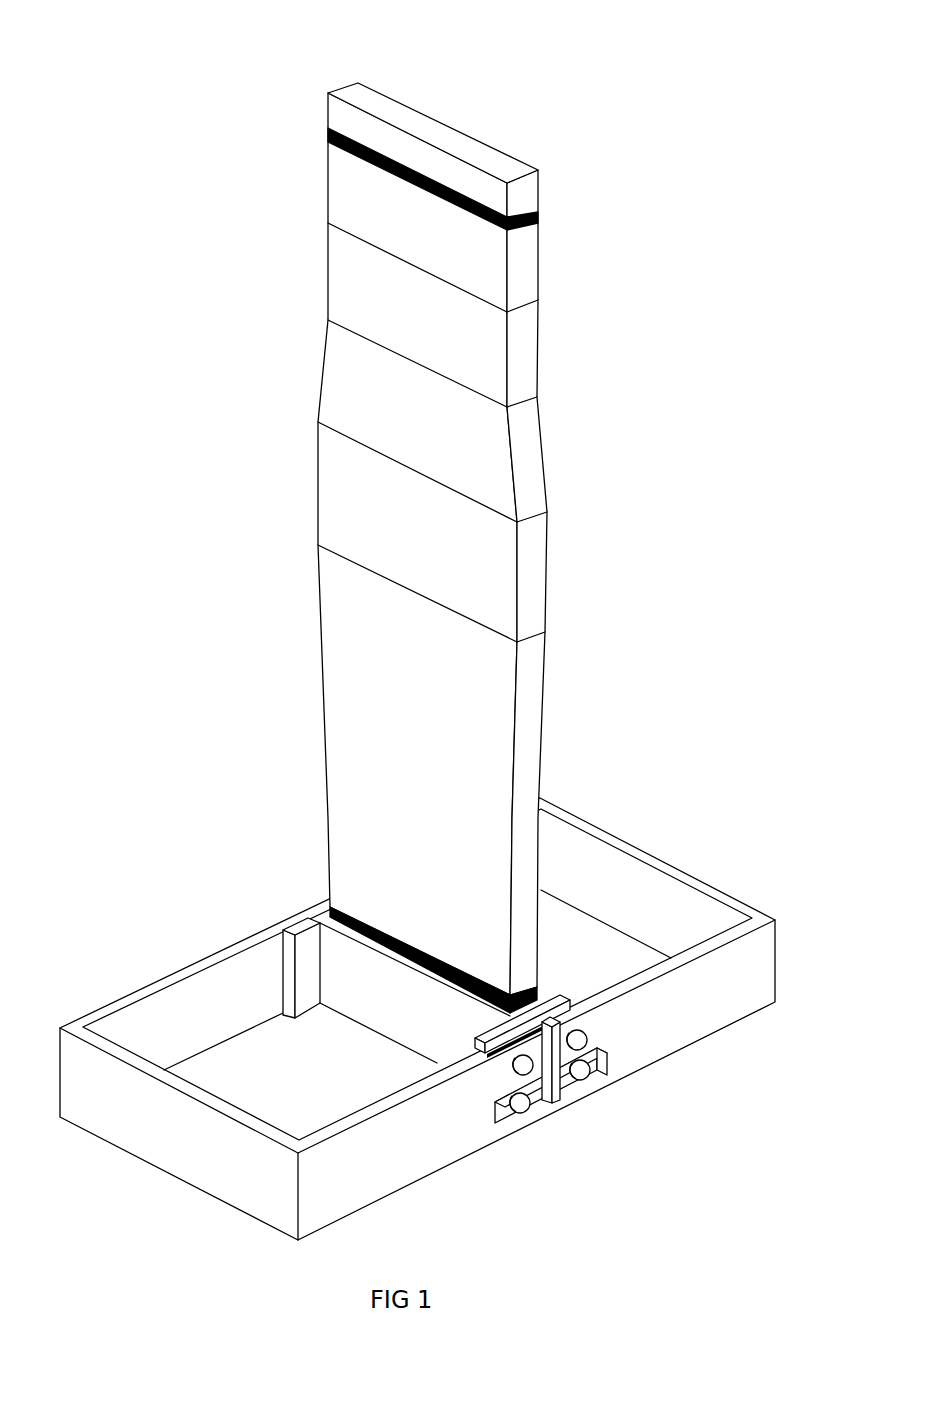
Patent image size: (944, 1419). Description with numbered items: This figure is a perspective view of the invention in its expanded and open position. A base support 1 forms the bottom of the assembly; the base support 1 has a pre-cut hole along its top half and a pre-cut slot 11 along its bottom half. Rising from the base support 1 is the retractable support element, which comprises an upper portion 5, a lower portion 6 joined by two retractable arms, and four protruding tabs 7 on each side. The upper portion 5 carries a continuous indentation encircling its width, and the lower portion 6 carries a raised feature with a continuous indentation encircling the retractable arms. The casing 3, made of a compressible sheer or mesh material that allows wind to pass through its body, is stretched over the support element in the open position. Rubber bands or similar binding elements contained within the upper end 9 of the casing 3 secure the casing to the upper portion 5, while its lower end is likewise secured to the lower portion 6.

The base support 1 is at (678, 851).
The casing 3 is at (564, 691).
The upper portion 5 is at (422, 117).
The lower portion 6 is at (356, 983).
The protruding tabs 7 is at (540, 1115).
The upper end of casing 9 is at (560, 219).
The pre-cut slot 11 is at (614, 1077).